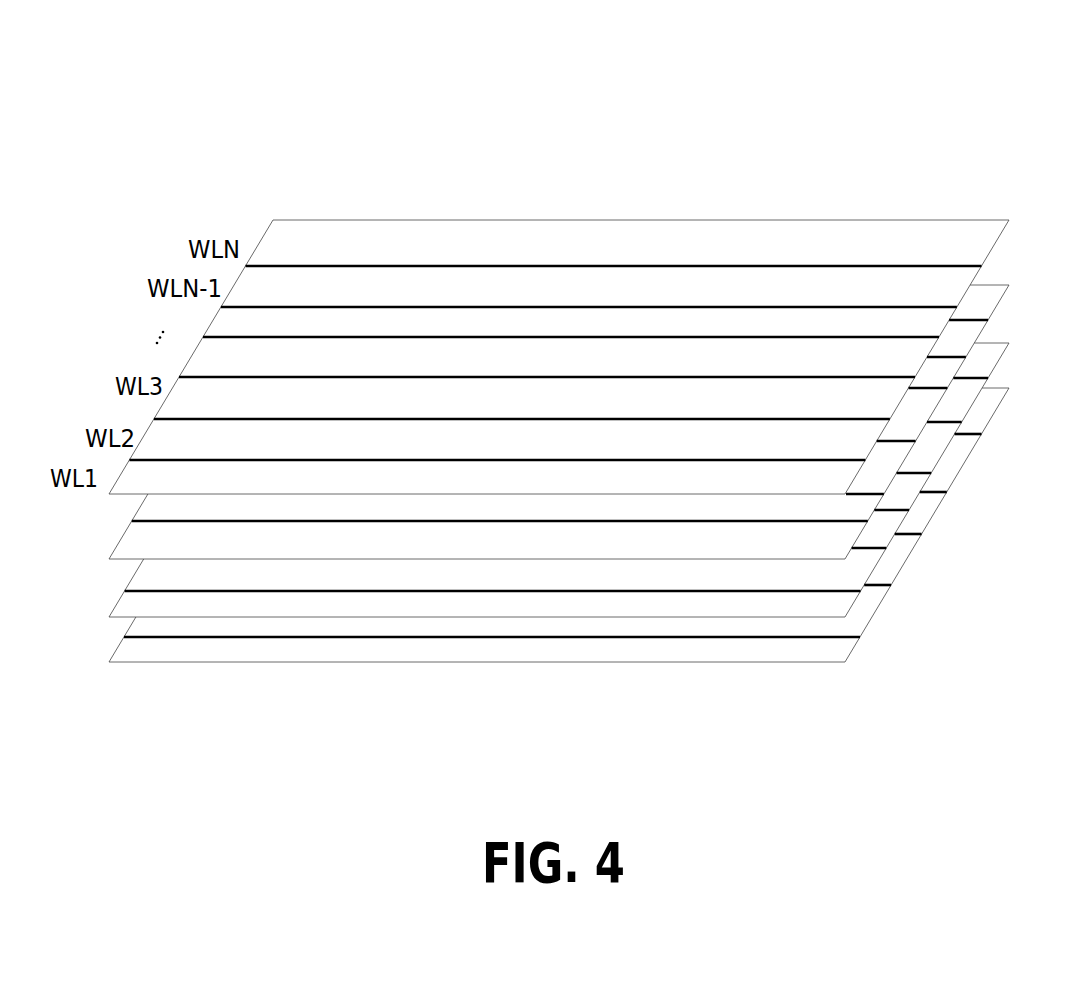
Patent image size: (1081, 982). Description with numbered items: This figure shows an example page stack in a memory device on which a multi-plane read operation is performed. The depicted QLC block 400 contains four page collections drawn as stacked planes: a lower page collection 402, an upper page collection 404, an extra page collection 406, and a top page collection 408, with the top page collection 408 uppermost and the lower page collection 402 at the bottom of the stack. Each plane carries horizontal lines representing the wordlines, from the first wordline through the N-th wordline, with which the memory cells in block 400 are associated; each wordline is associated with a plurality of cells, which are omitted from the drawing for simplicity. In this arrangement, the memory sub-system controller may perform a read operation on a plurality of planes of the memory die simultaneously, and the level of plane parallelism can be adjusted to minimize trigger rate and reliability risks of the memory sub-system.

The QLC block 400 is at (642, 107).
The lower page collection 402 is at (990, 397).
The upper page collection 404 is at (990, 353).
The extra page collection 406 is at (990, 292).
The top page collection 408 is at (973, 233).